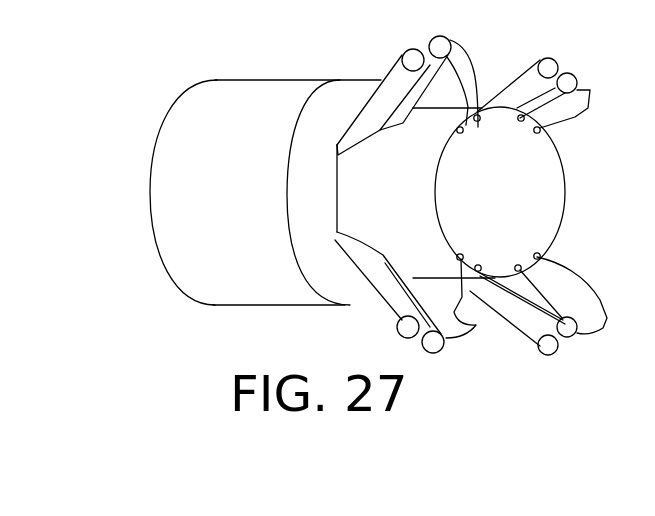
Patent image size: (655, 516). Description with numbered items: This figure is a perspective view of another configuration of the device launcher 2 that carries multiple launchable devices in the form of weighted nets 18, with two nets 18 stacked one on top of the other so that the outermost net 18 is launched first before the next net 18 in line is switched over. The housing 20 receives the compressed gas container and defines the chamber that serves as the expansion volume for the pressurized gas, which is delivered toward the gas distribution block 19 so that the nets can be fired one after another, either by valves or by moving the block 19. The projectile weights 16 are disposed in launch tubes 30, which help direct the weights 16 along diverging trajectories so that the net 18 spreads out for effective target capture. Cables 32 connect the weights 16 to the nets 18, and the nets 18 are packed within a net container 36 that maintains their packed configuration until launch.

The device launcher 2 is at (188, 59).
The projectile weights 16 is at (440, 46).
The weighted net 18 is at (495, 195).
The gas distribution block 19 is at (315, 253).
The housing 20 is at (231, 265).
The launch tubes 30 is at (393, 83).
The cables 32 is at (541, 102).
The net container 36 is at (372, 207).